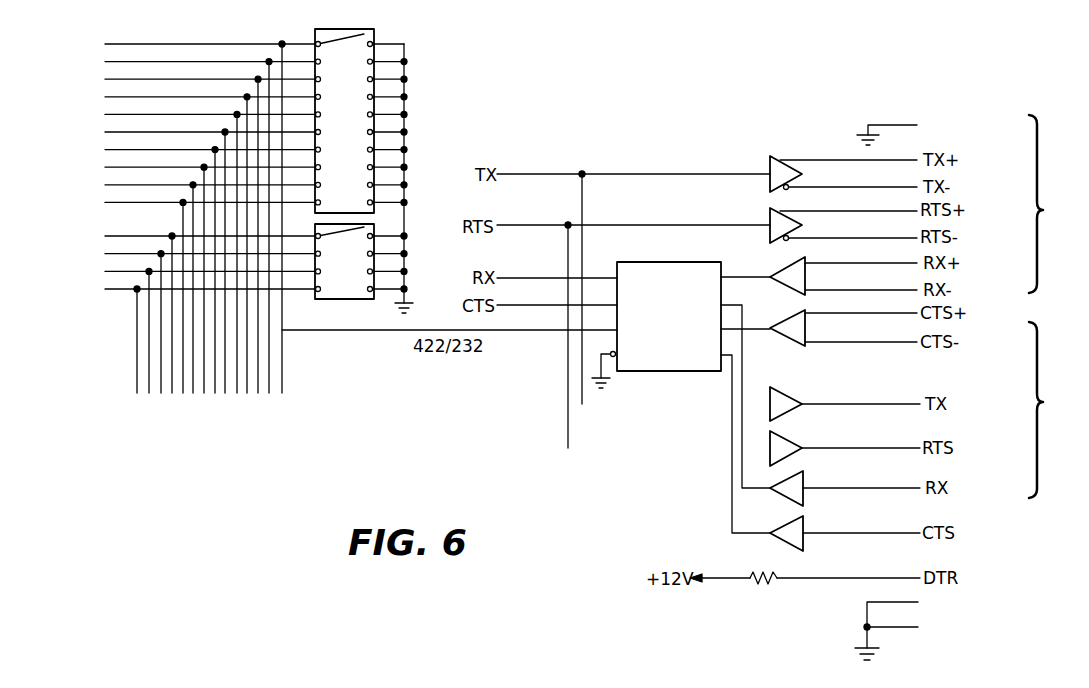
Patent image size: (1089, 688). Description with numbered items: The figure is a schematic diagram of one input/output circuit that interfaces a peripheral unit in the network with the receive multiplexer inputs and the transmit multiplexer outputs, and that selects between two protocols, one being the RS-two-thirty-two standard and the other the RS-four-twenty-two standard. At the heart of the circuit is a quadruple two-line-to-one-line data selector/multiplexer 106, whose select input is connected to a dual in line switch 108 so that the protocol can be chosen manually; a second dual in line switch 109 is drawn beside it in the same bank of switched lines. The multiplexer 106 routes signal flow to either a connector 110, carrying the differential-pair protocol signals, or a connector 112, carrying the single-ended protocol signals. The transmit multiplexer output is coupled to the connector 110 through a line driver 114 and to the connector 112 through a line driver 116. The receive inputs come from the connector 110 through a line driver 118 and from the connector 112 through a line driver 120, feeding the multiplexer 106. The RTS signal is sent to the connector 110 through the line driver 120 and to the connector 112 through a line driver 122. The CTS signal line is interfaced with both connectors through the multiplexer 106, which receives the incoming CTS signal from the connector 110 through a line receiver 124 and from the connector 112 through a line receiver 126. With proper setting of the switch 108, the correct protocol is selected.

The data selector/multiplexer 106 is at (643, 260).
The dual in line switch 108 is at (345, 27).
The DIP switch block 109 is at (335, 303).
The connector 110 is at (1056, 204).
The connector 112 is at (1056, 410).
The line driver 114 is at (763, 182).
The line driver 116 is at (797, 408).
The line driver 118 is at (772, 287).
The line driver 120 is at (765, 233).
The line driver 122 is at (800, 455).
The line receiver 124 is at (802, 342).
The line receiver 126 is at (805, 543).